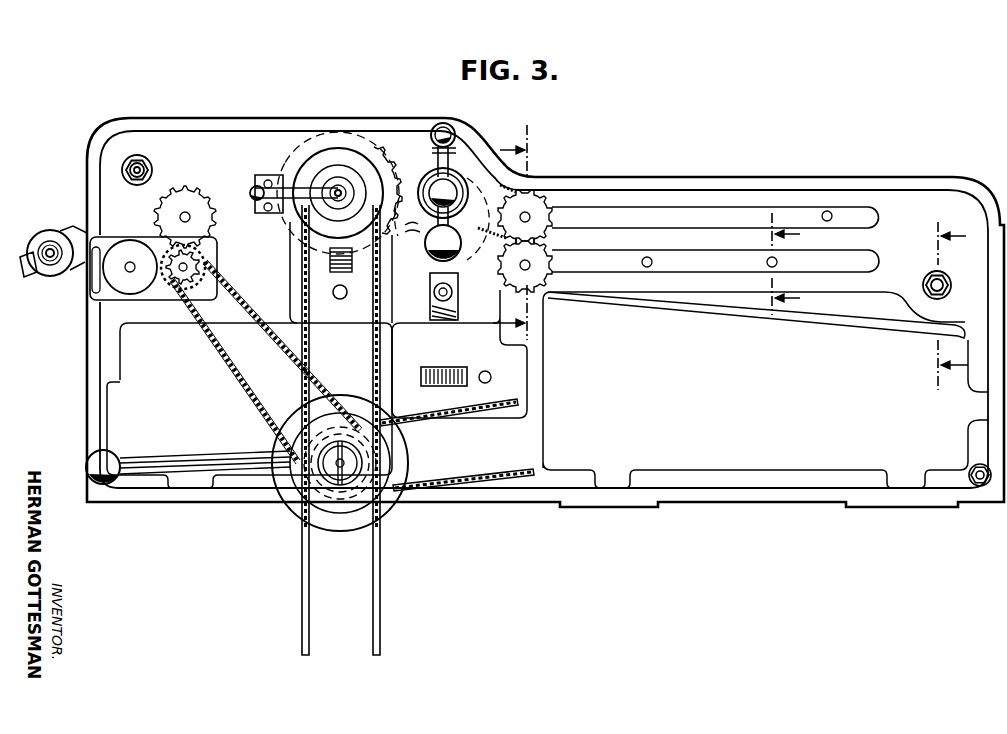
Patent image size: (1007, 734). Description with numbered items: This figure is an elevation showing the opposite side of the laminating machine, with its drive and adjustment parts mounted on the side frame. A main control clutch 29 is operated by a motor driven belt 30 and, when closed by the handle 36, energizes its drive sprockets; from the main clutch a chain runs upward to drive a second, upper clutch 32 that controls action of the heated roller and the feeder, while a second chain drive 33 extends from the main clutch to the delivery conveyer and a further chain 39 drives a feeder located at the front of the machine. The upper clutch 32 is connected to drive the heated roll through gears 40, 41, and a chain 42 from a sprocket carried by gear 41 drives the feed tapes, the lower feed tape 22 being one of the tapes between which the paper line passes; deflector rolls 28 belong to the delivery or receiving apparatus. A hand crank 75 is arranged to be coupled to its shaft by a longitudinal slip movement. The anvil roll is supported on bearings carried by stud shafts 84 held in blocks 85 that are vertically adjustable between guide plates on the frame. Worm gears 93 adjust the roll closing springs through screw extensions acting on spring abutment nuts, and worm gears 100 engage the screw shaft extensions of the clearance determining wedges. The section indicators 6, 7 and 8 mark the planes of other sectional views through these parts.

The lower feed tape 22 is at (833, 326).
The deflector rolls 28 is at (64, 232).
The main control clutch 29 is at (372, 442).
The motor driven belt 30 is at (375, 578).
The clutch 32 is at (300, 182).
The second chain drive 33 is at (282, 353).
The handle 36 is at (218, 458).
The chain 39 is at (492, 476).
The gear 40 is at (396, 166).
The gear 41 is at (414, 224).
The chain 42 is at (522, 188).
The hand crank 75 is at (454, 212).
The stud shafts 84 is at (458, 293).
The blocks 85 is at (457, 281).
The worm gears 93 is at (466, 368).
The worm gears 100 is at (343, 263).
The section line 6 is at (944, 306).
The section line 7 is at (776, 264).
The section line 8 is at (518, 232).